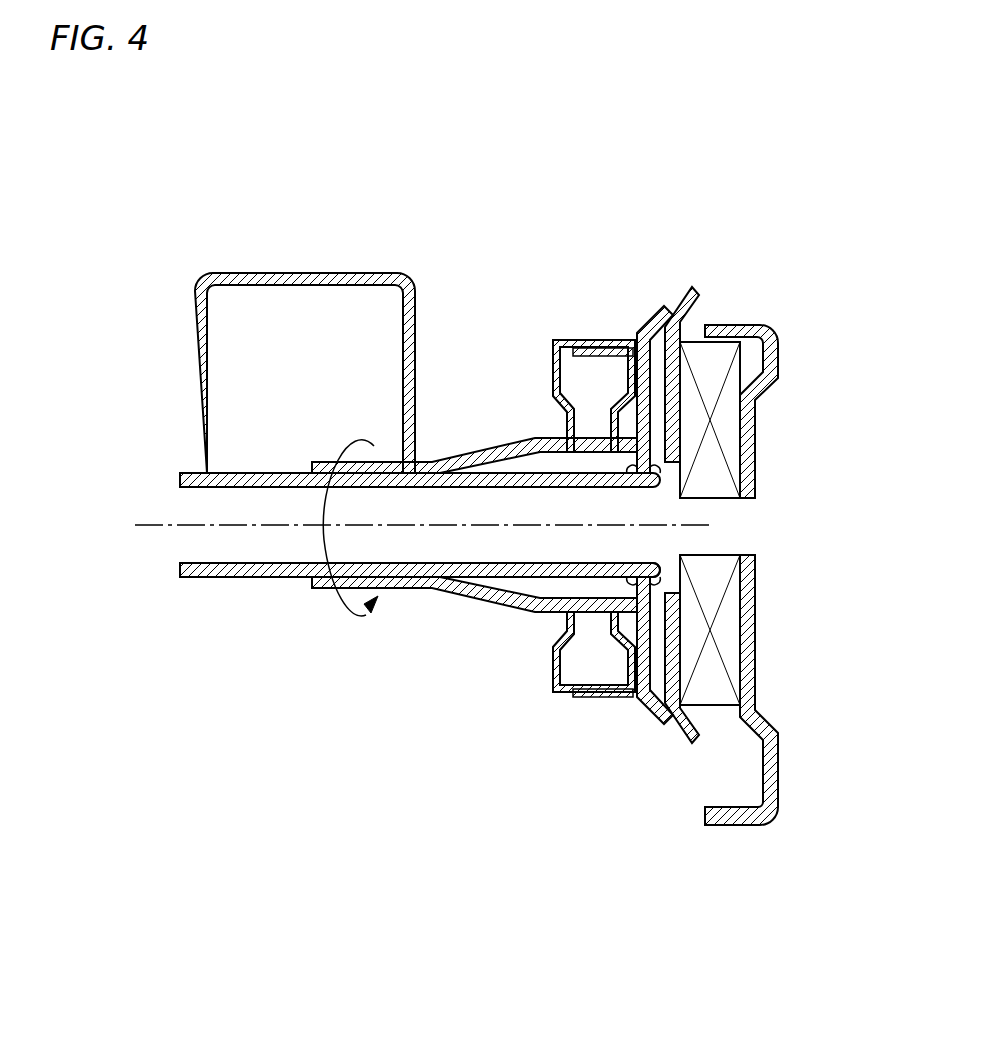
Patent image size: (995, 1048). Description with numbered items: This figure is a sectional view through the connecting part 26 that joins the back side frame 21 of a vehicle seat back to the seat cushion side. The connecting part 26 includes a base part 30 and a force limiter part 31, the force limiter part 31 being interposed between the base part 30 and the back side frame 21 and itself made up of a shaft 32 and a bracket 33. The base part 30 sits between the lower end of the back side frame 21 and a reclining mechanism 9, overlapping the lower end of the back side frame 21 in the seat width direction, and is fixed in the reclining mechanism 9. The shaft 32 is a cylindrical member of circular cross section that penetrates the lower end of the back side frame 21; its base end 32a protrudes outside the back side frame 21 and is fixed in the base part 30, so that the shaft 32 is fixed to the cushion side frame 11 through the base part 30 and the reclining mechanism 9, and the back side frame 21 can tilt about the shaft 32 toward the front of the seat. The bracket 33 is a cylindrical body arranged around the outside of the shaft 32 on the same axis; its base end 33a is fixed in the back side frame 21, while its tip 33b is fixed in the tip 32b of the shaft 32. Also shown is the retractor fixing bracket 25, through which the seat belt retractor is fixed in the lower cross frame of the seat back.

The reclining mechanism 9 is at (728, 322).
The cushion side frame 11 is at (723, 824).
The back side frame 21 is at (598, 340).
The retractor fixing bracket 25 is at (312, 272).
The connecting part 26 is at (426, 571).
The base part 30 is at (622, 553).
The force limiter part 31 is at (420, 681).
The shaft 32 is at (457, 583).
The base end of shaft 32a is at (657, 563).
The tip of shaft 32b is at (278, 578).
The bracket 33 is at (507, 602).
The base end of bracket 33a is at (600, 692).
The tip of bracket 33b is at (338, 588).